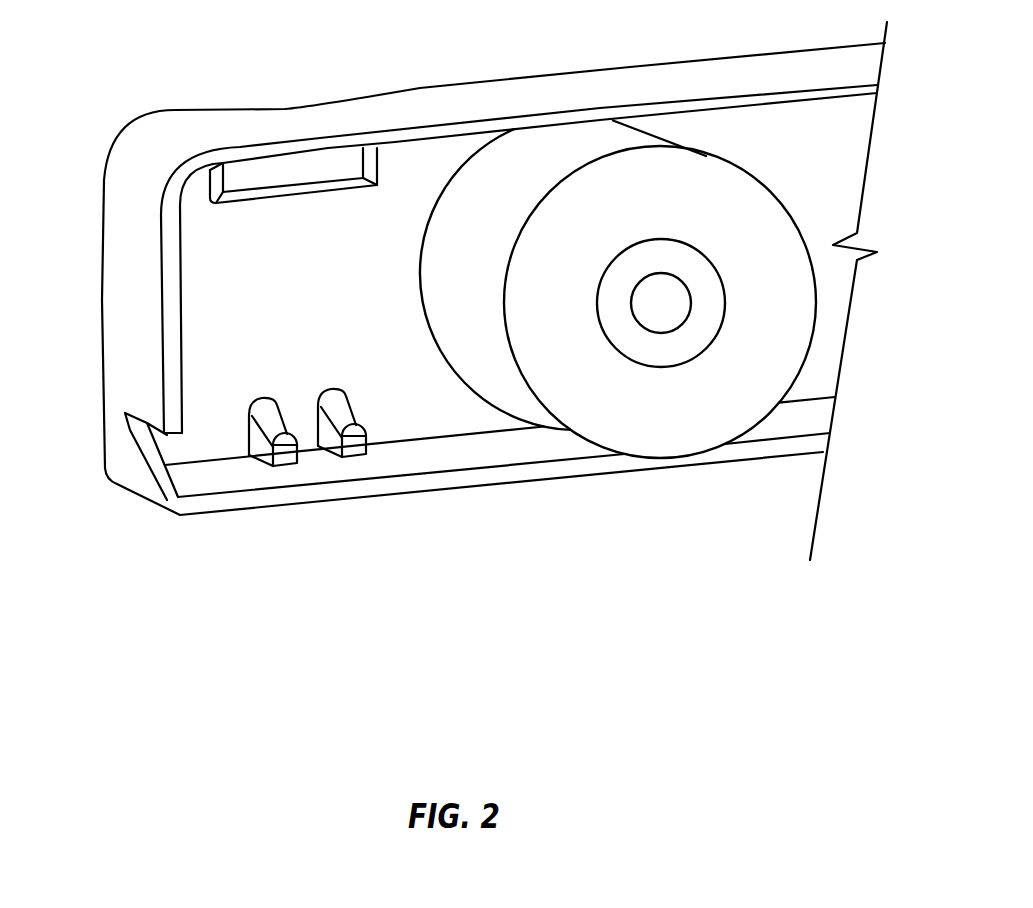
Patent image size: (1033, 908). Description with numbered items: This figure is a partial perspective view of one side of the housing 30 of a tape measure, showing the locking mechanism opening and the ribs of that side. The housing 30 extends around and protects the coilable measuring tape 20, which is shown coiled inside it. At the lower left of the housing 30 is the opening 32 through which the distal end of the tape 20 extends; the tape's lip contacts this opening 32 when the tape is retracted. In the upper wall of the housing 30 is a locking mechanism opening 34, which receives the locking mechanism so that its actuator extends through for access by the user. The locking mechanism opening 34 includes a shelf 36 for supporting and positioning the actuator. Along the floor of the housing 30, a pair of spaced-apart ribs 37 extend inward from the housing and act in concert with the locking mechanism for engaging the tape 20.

The coilable measuring tape 20 is at (660, 417).
The housing 30 is at (220, 268).
The opening 32 is at (173, 452).
The locking mechanism opening 34 is at (275, 170).
The shelf 36 is at (330, 185).
The ribs 37 is at (287, 459).